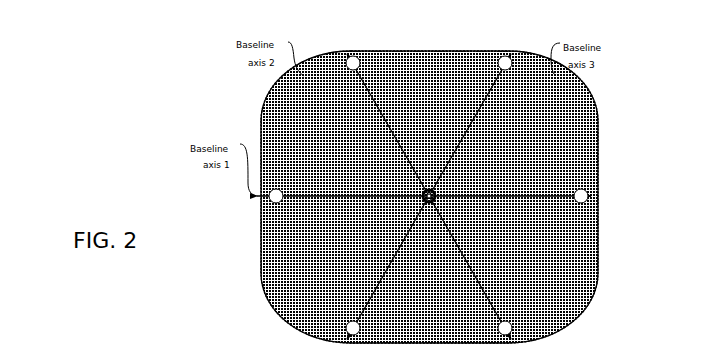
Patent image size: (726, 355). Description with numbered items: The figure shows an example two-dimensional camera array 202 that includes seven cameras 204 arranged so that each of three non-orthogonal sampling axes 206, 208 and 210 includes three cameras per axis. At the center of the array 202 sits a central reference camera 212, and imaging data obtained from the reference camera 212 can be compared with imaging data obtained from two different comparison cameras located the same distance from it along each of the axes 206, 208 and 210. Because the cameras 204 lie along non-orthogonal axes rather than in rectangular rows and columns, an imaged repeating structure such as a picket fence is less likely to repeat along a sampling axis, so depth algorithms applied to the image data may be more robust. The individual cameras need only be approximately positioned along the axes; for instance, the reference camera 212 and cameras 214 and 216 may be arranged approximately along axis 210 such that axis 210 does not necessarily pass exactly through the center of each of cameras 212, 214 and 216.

The 2D camera array 202 is at (429, 197).
The cameras 204 is at (222, 106).
The sampling axis 206 is at (312, 180).
The sampling axis 208 is at (469, 124).
The sampling axis 210 is at (454, 237).
The central reference camera 212 is at (419, 180).
The camera 214 is at (339, 45).
The camera 216 is at (500, 317).